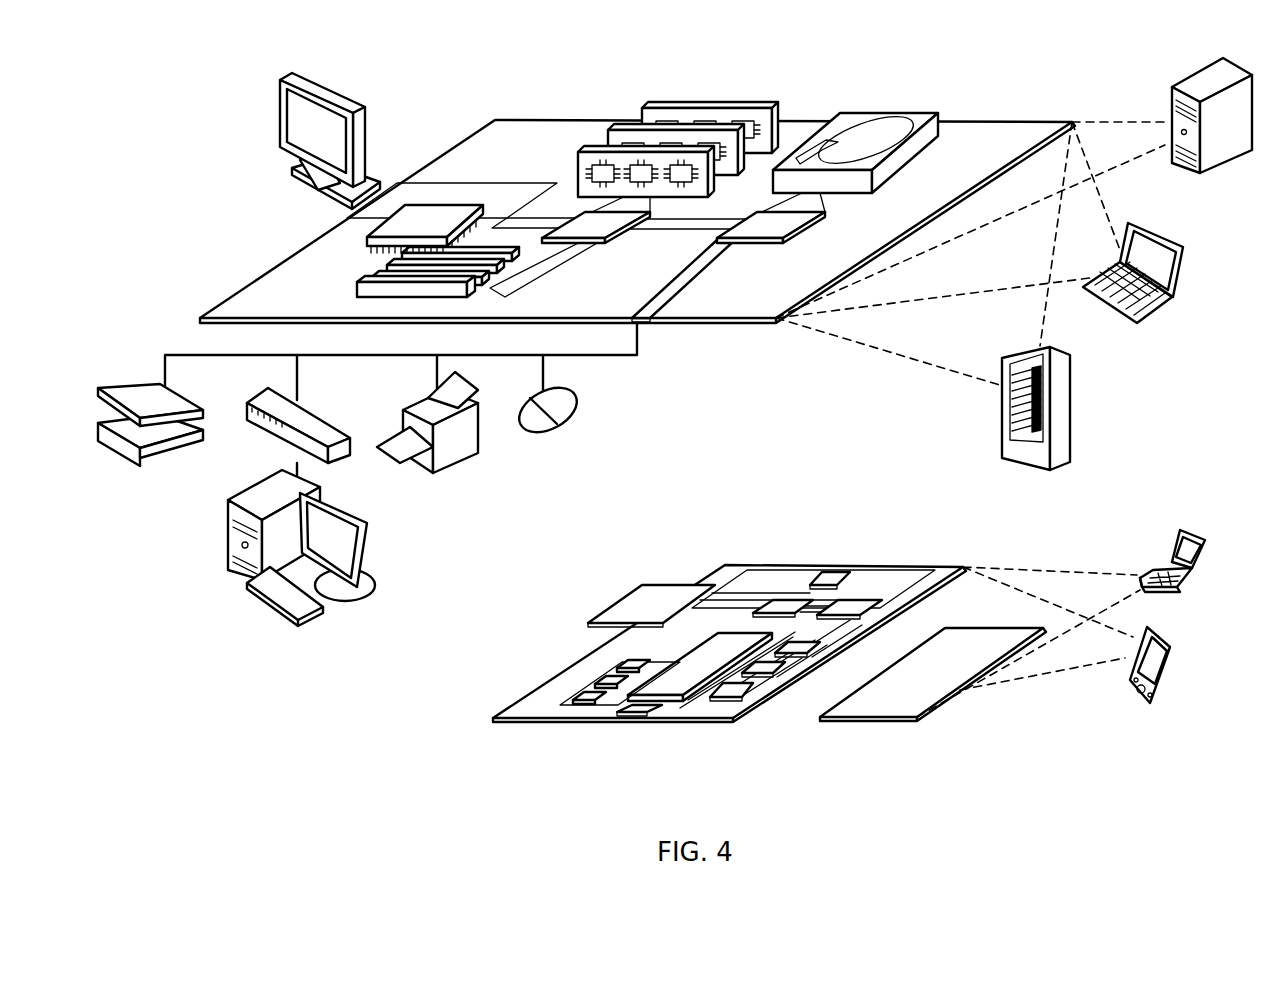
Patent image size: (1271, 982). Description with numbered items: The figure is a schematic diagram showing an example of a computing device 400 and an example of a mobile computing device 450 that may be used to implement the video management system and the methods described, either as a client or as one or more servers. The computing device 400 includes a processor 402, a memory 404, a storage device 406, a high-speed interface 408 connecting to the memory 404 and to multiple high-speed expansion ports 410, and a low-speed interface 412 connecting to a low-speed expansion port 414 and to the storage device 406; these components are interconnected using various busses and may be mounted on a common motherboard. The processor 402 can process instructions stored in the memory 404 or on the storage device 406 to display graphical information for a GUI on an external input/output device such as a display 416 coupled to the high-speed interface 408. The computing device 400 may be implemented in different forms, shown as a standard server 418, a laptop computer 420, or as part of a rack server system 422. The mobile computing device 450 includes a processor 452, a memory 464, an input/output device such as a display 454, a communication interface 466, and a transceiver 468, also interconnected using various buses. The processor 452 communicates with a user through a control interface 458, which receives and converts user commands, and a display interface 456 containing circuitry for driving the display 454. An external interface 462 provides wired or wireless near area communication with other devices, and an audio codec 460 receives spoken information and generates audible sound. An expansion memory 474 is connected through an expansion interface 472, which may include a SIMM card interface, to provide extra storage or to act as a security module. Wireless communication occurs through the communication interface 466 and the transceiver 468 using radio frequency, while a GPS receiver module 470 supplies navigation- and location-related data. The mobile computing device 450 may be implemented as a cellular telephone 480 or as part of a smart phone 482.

The computing device 400 is at (474, 92).
The processor 402 is at (378, 224).
The memory 404 is at (706, 106).
The storage device 406 is at (900, 113).
The high-speed interface 408 is at (595, 245).
The high-speed expansion ports 410 is at (355, 293).
The low-speed interface 412 is at (810, 236).
The low-speed expansion port 414 is at (692, 287).
The display 416 is at (276, 77).
The standard server 418 is at (1185, 73).
The laptop computer 420 is at (1188, 247).
The rack server system 422 is at (1072, 412).
The mobile computing device 450 is at (686, 517).
The processor 452 is at (687, 652).
The display 454 is at (870, 722).
The display interface 456 is at (727, 699).
The control interface 458 is at (763, 676).
The audio codec 460 is at (797, 655).
The external interface 462 is at (626, 718).
The memory 464 is at (573, 689).
The communication interface 466 is at (786, 600).
The transceiver 468 is at (853, 612).
The GPS receiver module 470 is at (837, 583).
The expansion interface 472 is at (712, 584).
The expansion memory 474 is at (632, 605).
The cellular telephone 480 is at (1205, 528).
The smart phone 482 is at (1172, 638).